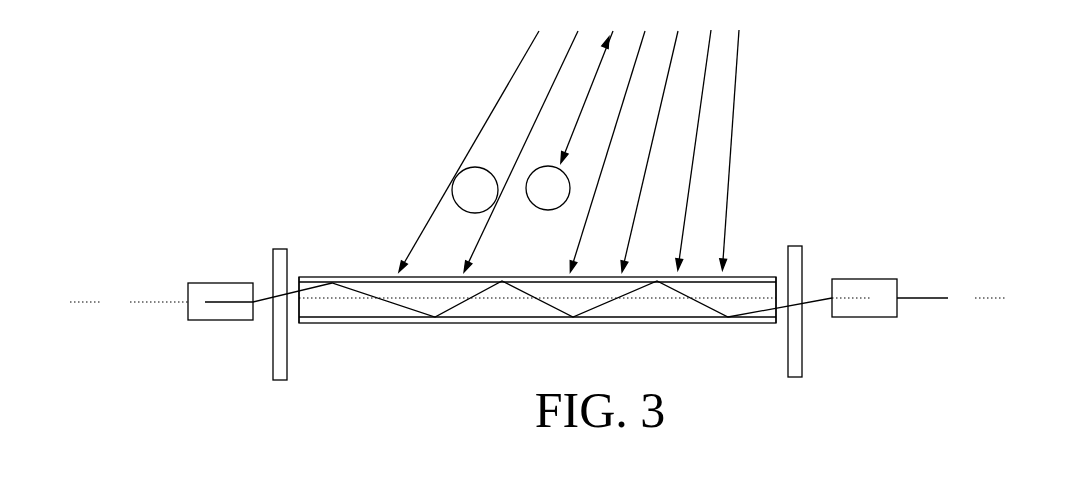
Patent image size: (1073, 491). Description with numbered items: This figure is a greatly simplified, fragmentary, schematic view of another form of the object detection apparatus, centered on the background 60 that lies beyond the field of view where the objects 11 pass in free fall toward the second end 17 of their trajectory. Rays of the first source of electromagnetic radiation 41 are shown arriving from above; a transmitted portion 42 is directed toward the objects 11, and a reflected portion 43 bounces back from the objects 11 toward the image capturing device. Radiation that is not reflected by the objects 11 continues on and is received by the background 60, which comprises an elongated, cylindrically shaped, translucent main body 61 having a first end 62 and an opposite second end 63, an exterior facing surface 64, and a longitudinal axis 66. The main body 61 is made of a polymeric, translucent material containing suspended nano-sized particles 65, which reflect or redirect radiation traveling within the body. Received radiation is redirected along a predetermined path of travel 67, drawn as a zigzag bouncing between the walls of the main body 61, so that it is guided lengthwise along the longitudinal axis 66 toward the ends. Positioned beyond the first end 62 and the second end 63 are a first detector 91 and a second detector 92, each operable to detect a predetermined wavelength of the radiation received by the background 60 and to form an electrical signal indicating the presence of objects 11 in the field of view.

The objects 11 is at (465, 182).
The second end of the free-fall path of travel 17 is at (785, 146).
The first source of electromagnetic radiation 41 is at (737, 75).
The transmitted electromagnetic radiation 42 is at (509, 80).
The reflected electromagnetic radiation 43 is at (603, 53).
The background 60 is at (736, 350).
The main body 61 is at (370, 328).
The first end 62 is at (322, 275).
The second end 63 is at (747, 273).
The exterior facing surface 64 is at (357, 275).
The nano-sized particles 65 is at (500, 307).
The longitudinal axis 66 is at (140, 310).
The predetermined path of travel 67 is at (423, 302).
The first detector 91 is at (220, 282).
The second detector 92 is at (880, 278).